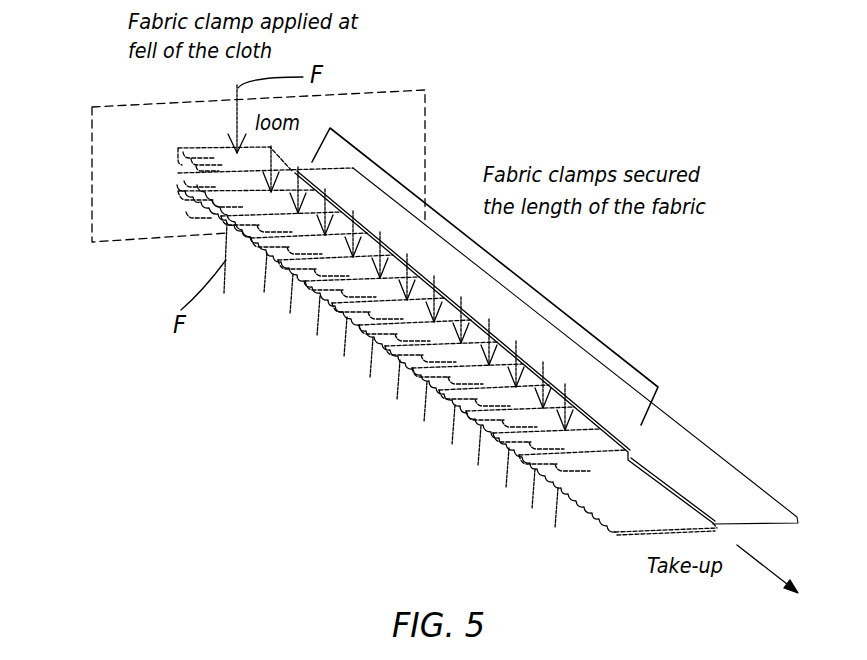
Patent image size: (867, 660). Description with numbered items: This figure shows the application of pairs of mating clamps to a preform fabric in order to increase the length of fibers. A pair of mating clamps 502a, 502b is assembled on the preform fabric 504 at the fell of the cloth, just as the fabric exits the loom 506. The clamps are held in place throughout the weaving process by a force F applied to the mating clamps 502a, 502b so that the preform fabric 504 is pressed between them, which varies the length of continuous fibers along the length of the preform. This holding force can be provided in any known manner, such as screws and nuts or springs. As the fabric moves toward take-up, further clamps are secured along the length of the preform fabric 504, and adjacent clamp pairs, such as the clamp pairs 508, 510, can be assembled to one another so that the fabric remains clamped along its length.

The mating clamp 502a is at (196, 148).
The mating clamp 502b is at (178, 203).
The preform fabric 504 is at (678, 450).
The loom 506 is at (407, 132).
The adjacent clamp pair 508 is at (411, 377).
The adjacent clamp pair 510 is at (440, 397).